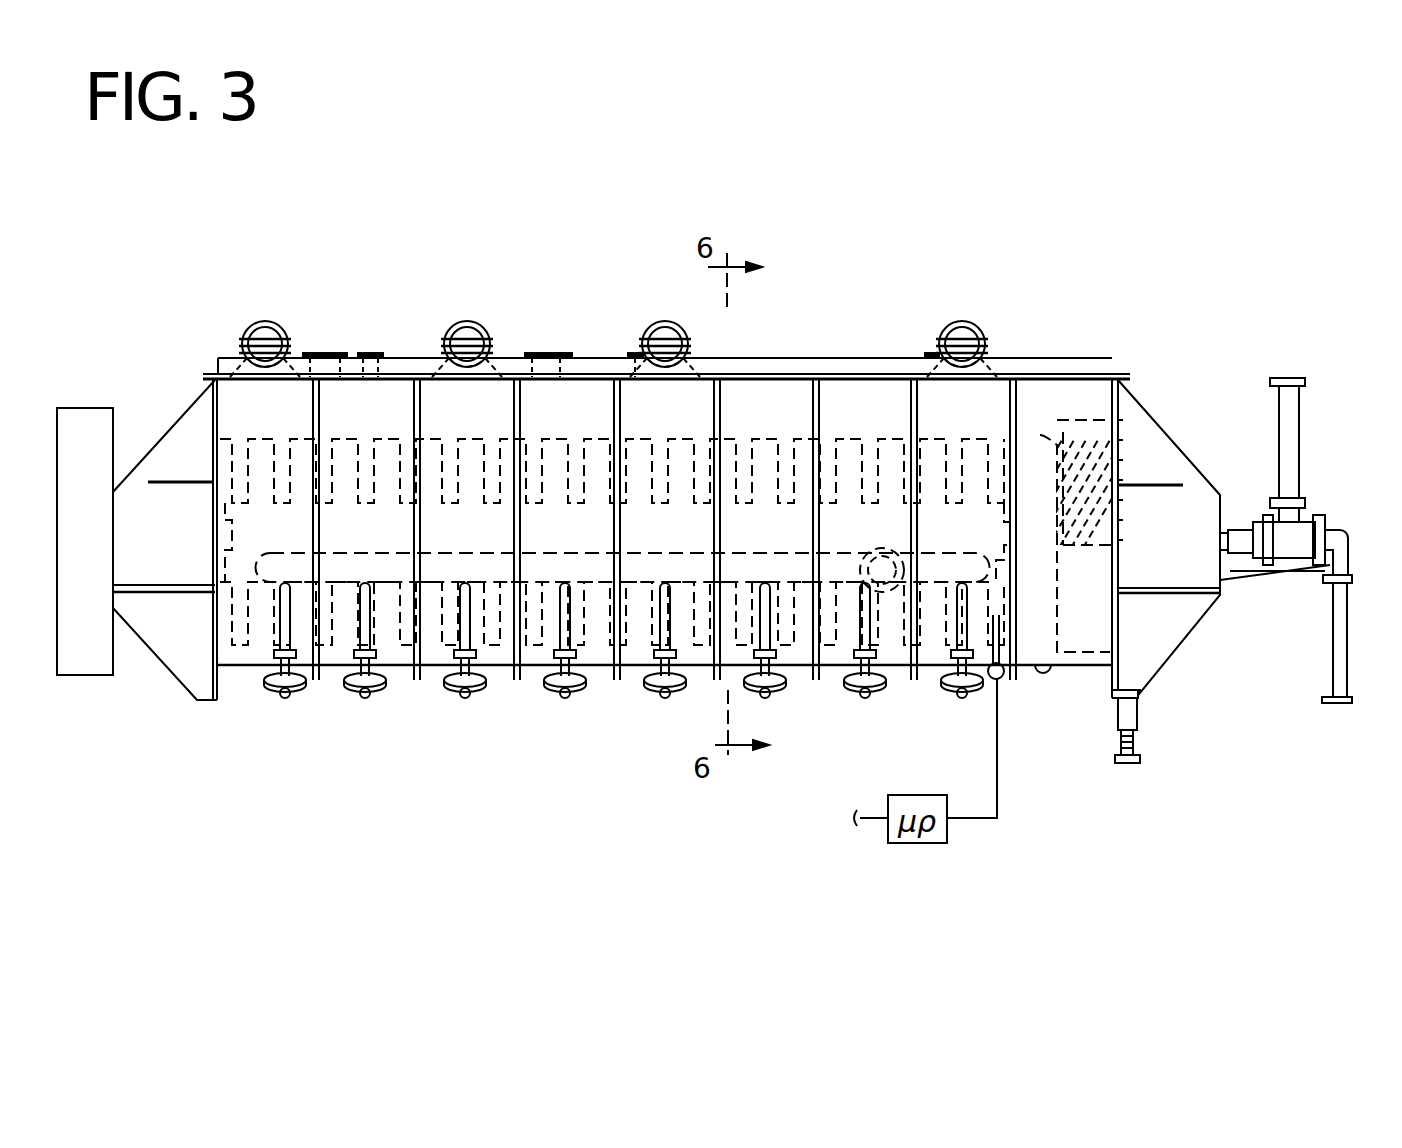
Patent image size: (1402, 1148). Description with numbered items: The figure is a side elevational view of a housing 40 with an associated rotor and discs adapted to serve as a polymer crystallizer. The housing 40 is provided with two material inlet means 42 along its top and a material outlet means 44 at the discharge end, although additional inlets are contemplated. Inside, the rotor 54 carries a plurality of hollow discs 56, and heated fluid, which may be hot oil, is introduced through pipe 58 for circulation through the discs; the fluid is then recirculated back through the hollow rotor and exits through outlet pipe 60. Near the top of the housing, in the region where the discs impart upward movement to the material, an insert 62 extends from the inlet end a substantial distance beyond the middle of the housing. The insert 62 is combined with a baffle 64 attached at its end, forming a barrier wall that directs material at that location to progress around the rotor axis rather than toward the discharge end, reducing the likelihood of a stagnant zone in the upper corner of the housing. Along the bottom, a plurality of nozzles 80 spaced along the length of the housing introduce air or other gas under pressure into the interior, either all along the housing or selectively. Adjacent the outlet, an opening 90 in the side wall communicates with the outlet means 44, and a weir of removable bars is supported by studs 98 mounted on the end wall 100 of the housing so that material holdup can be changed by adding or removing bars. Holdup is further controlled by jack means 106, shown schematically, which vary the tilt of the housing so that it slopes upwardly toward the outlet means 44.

The housing 40 is at (796, 358).
The material inlet means 42 is at (325, 352).
The material outlet means 44 is at (1040, 435).
The rotor 54 is at (247, 500).
The hollow discs 56 is at (593, 445).
The pipe 58 is at (1290, 460).
The outlet pipe 60 is at (1345, 662).
The insert 62 is at (458, 410).
The baffle 64 is at (749, 505).
The nozzles 80 is at (290, 625).
The opening 90 is at (1080, 428).
The studs 98 is at (1120, 460).
The end wall 100 is at (1120, 565).
The jack means 106 is at (1137, 722).